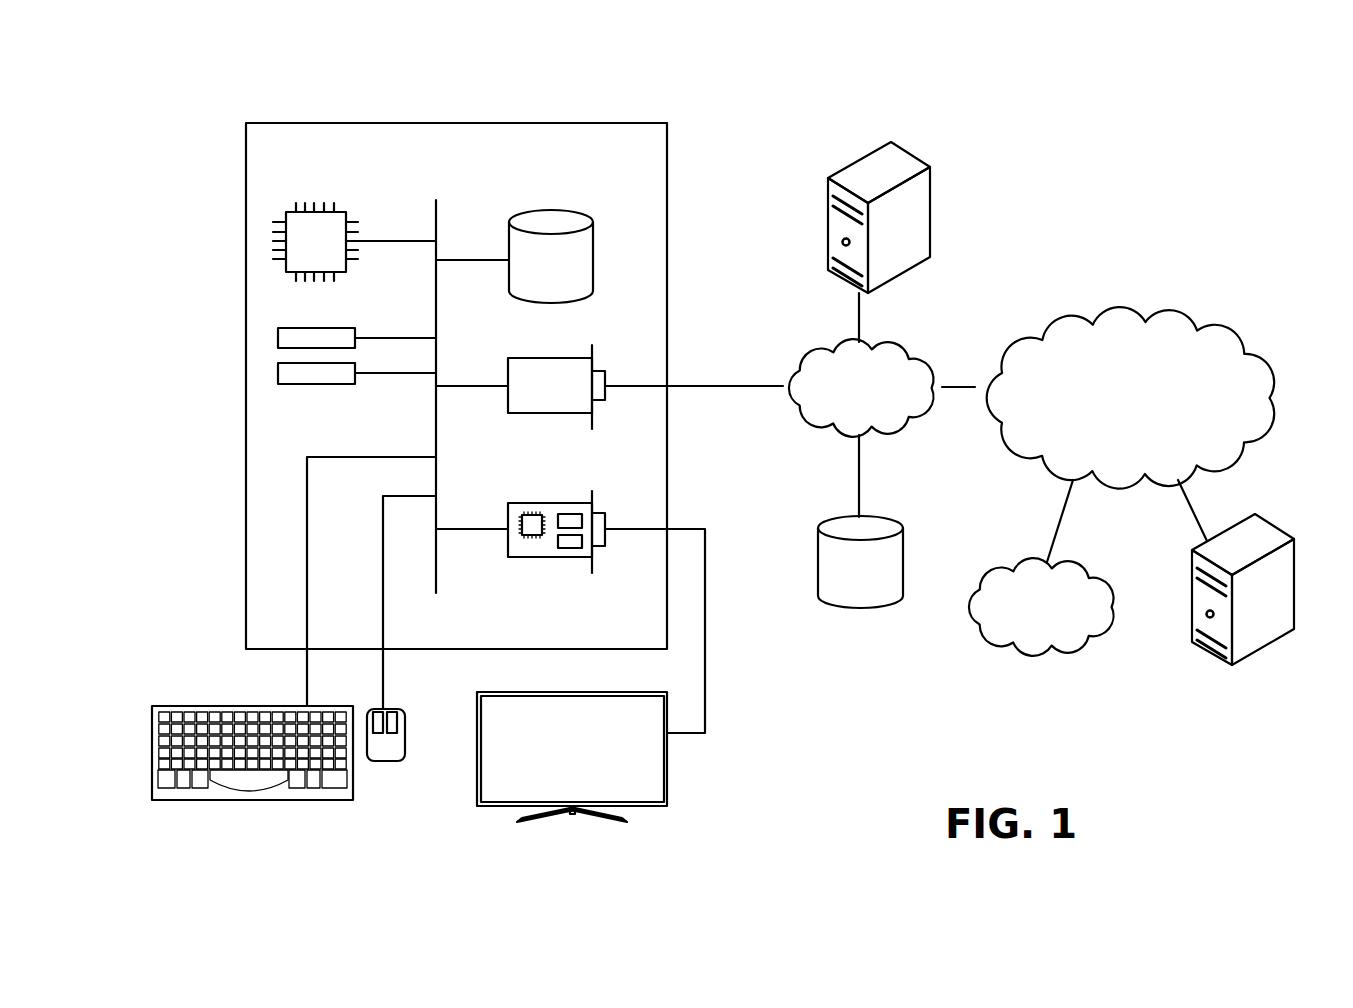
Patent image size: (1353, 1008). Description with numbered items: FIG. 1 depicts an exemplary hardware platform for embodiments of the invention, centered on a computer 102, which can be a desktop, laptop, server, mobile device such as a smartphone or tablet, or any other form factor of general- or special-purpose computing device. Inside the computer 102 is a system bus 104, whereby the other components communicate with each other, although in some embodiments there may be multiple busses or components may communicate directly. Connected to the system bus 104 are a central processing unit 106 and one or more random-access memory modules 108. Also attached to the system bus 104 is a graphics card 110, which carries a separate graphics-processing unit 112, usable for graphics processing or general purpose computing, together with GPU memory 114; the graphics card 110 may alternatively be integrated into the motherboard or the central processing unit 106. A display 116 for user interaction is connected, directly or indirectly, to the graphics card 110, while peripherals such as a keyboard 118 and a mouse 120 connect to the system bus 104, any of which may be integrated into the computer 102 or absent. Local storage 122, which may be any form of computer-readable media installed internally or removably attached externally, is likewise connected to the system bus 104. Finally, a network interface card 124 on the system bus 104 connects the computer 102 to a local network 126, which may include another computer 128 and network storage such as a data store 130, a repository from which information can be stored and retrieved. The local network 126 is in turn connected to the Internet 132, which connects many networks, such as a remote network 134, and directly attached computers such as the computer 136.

The computer 102 is at (622, 123).
The system bus 104 is at (437, 212).
The central processing unit 106 is at (340, 208).
The random-access memory modules 108 is at (355, 369).
The graphics card 110 is at (551, 532).
The graphics-processing unit 112 is at (530, 535).
The GPU memory 114 is at (569, 548).
The display 116 is at (667, 785).
The keyboard 118 is at (255, 800).
The mouse 120 is at (383, 762).
The local storage 122 is at (594, 242).
The network interface card 124 is at (508, 358).
The local network 126 is at (915, 345).
The computer 128 is at (918, 152).
The data store 130 is at (895, 518).
The Internet 132 is at (1178, 308).
The remote network 134 is at (1098, 563).
The computer 136 is at (1268, 520).